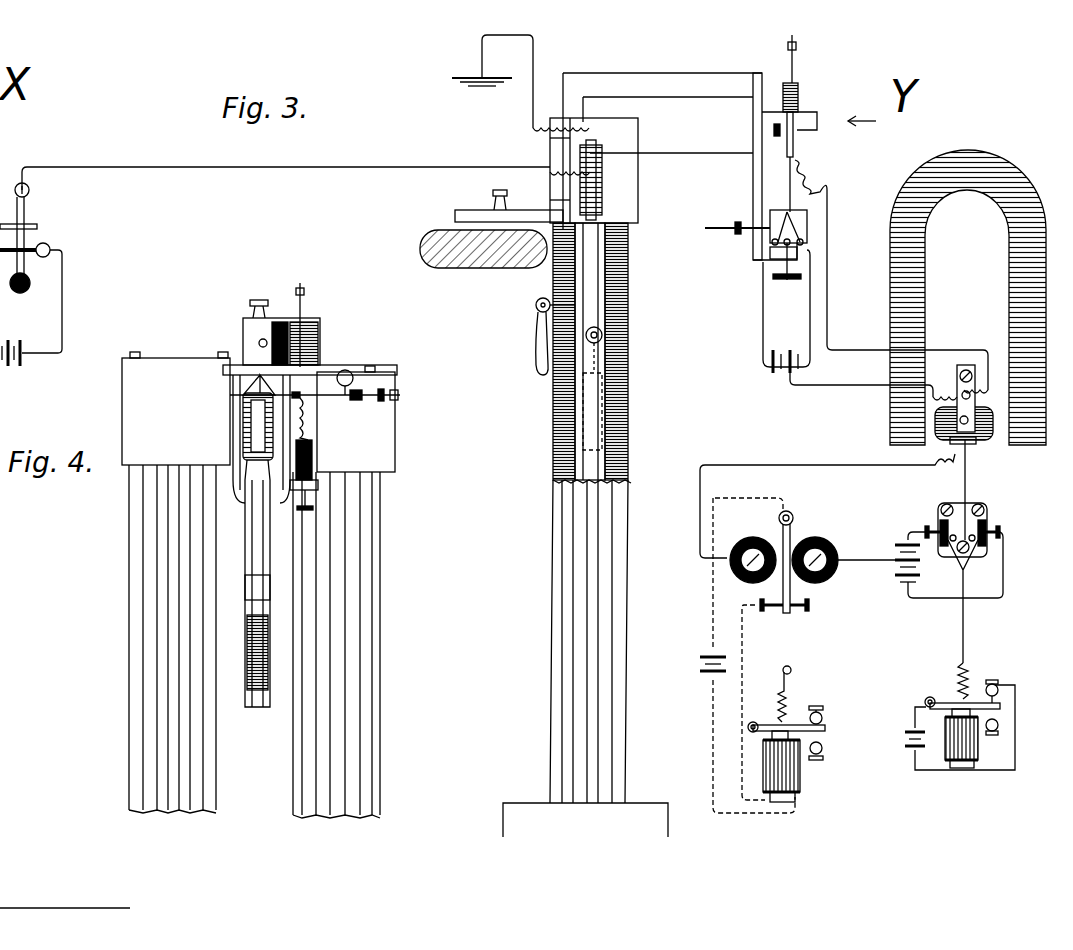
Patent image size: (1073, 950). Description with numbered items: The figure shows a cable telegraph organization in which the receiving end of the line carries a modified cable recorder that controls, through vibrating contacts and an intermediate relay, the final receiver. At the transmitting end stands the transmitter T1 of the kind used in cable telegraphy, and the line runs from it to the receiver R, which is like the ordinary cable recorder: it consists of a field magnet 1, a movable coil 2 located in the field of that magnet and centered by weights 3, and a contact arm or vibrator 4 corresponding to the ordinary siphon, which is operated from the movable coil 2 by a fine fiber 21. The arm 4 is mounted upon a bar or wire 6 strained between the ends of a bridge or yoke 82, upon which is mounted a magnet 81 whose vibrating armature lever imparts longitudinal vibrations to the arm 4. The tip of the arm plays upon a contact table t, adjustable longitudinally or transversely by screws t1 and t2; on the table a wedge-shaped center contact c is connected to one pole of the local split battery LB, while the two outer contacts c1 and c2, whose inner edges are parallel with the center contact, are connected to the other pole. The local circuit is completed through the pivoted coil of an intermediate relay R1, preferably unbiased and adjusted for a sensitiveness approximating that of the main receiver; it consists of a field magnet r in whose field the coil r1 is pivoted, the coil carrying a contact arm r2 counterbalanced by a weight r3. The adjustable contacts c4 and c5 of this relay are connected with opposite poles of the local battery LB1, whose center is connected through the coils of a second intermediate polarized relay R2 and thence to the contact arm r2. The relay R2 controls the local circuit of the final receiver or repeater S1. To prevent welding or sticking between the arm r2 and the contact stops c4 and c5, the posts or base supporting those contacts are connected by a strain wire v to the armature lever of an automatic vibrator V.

In FIG. 3, the field magnet 1 is at (552, 540).
In FIG. 4, the field magnet 1 is at (122, 560).
In FIG. 3, the movable coil 2 is at (602, 176).
In FIG. 4, the movable coil 2 is at (245, 422).
In FIG. 3, the fine fiber 21 is at (671, 166).
In FIG. 3, the weights 3 is at (569, 374).
In FIG. 4, the weights 3 is at (262, 648).
In FIG. 3, the contact arm 4 is at (788, 186).
In FIG. 4, the contact arm 4 is at (310, 442).
In FIG. 4, the bar or wire 6 is at (338, 398).
In FIG. 3, the magnet 81 is at (798, 97).
In FIG. 3, the bridge or yoke 82 is at (793, 145).
In FIG. 4, the bridge or yoke 82 is at (256, 372).
In FIG. 3, the receiver R is at (591, 189).
In FIG. 4, the receiver R is at (259, 393).
In FIG. 3, the intermediate relay R1 is at (968, 297).
In FIG. 3, the polarized relay R2 is at (827, 633).
In FIG. 3, the final receiver or repeater S1 is at (786, 734).
In FIG. 3, the transmitter T1 is at (275, 266).
In FIG. 3, the automatic vibrator V is at (960, 716).
In FIG. 3, the strain wire v is at (963, 601).
In FIG. 3, the local split battery LB is at (848, 323).
In FIG. 3, the local battery LB1 is at (920, 565).
In FIG. 3, the center contact c is at (787, 228).
In FIG. 3, the outer contact c1 is at (777, 212).
In FIG. 3, the outer contact c2 is at (798, 212).
In FIG. 3, the adjustable contact c4 is at (938, 526).
In FIG. 3, the adjustable contact c5 is at (997, 522).
In FIG. 3, the contact table t is at (795, 226).
In FIG. 4, the contact table t is at (302, 468).
In FIG. 3, the adjusting screw t1 is at (737, 226).
In FIG. 3, the adjusting screw t2 is at (787, 279).
In FIG. 4, the adjusting screw t2 is at (296, 513).
In FIG. 3, the field magnet r is at (1040, 401).
In FIG. 3, the coil r1 is at (978, 442).
In FIG. 3, the contact arm r2 is at (966, 484).
In FIG. 3, the weight r3 is at (950, 380).